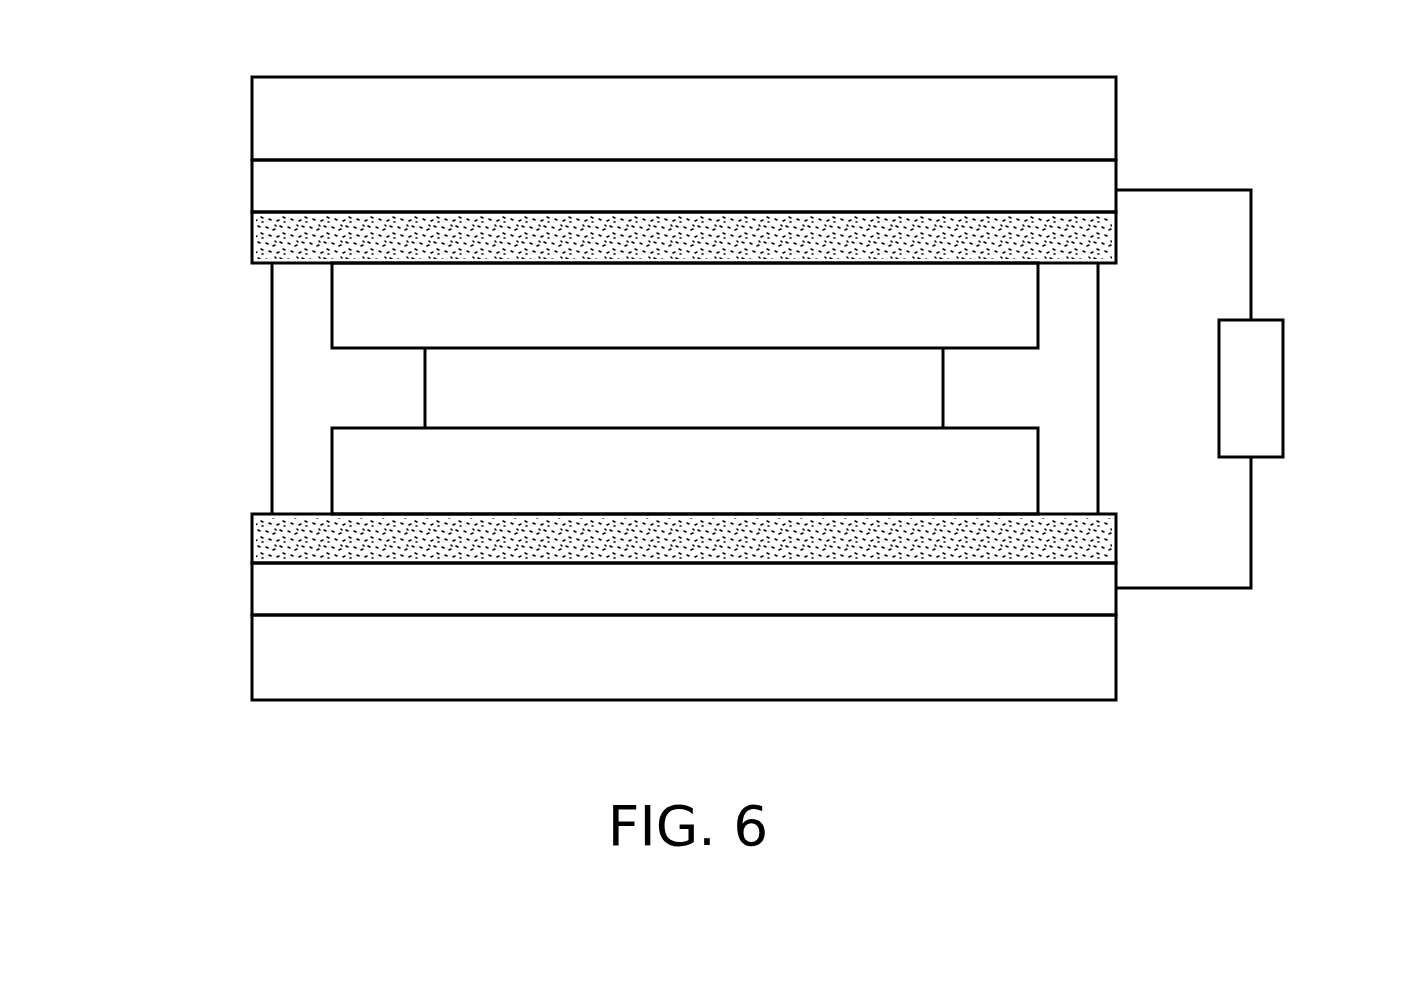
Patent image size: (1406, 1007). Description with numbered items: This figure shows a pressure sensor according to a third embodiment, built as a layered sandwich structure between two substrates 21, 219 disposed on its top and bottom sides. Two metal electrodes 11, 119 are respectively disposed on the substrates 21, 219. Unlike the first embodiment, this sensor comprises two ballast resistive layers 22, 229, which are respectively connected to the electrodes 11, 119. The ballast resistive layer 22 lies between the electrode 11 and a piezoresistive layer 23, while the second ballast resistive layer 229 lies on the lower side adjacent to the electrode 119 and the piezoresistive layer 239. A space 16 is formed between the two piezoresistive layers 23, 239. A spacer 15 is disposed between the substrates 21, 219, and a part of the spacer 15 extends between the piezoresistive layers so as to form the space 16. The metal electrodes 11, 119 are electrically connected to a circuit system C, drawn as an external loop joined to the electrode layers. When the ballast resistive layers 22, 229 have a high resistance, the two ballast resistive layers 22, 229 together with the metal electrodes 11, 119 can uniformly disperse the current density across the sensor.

The substrate 21 is at (272, 122).
The metal electrode 11 is at (272, 184).
The ballast resistive layer 22 is at (272, 236).
The spacer 15 is at (302, 290).
The piezoresistive layer 23 is at (370, 333).
The space 16 is at (475, 400).
The piezoresistive layer 239 is at (370, 478).
The ballast resistive layer 229 is at (272, 540).
The metal electrode 119 is at (272, 596).
The substrate 219 is at (272, 659).
The circuit system C is at (1260, 390).